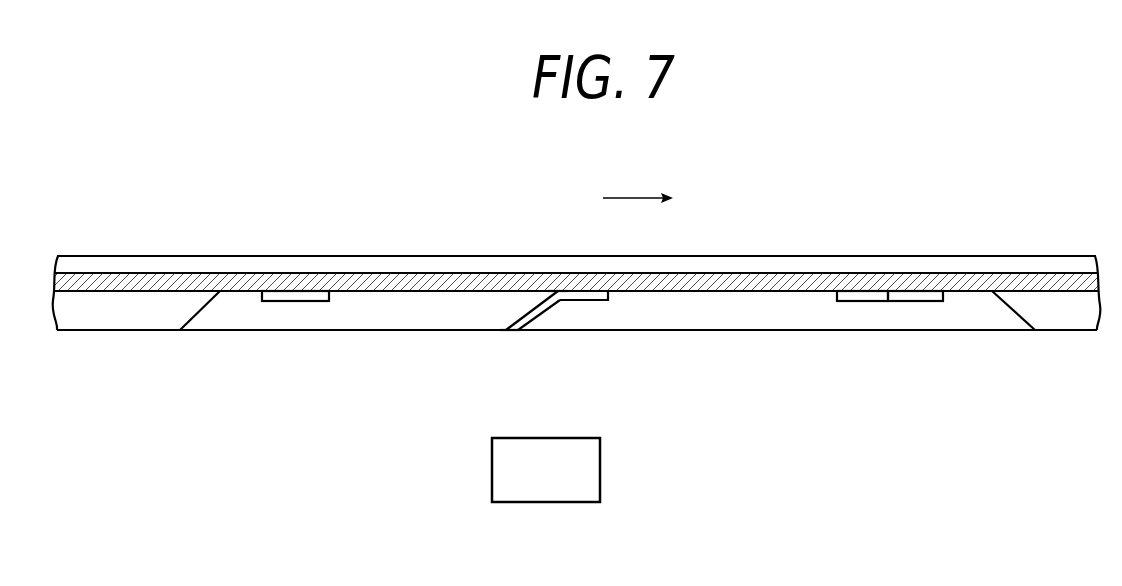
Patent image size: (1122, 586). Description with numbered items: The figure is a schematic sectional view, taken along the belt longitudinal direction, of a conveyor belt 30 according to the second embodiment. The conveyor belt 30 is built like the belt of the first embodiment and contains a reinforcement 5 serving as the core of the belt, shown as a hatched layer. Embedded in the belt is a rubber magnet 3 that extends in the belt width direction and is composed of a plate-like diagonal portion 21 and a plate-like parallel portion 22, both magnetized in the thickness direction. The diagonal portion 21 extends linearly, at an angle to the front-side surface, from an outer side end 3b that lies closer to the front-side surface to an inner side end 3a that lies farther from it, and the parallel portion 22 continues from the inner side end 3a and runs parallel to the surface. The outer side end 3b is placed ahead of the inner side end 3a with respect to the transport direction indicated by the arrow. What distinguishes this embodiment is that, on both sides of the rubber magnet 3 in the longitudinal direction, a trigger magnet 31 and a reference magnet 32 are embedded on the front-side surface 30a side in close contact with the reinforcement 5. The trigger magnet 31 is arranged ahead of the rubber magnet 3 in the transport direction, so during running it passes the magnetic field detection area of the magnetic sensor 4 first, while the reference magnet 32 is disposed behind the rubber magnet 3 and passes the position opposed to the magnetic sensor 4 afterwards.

The conveyor belt 30 is at (789, 239).
The front-side surface 30a is at (966, 331).
The reinforcement 5 is at (968, 283).
The rubber magnet 3 is at (648, 383).
The inner side end 3a is at (558, 290).
The outer side end 3b is at (507, 330).
The diagonal portion 21 is at (538, 318).
The parallel portion 22 is at (590, 301).
The trigger magnet 31 is at (877, 302).
The reference magnet 32 is at (297, 301).
The magnetic sensor 4 is at (492, 468).